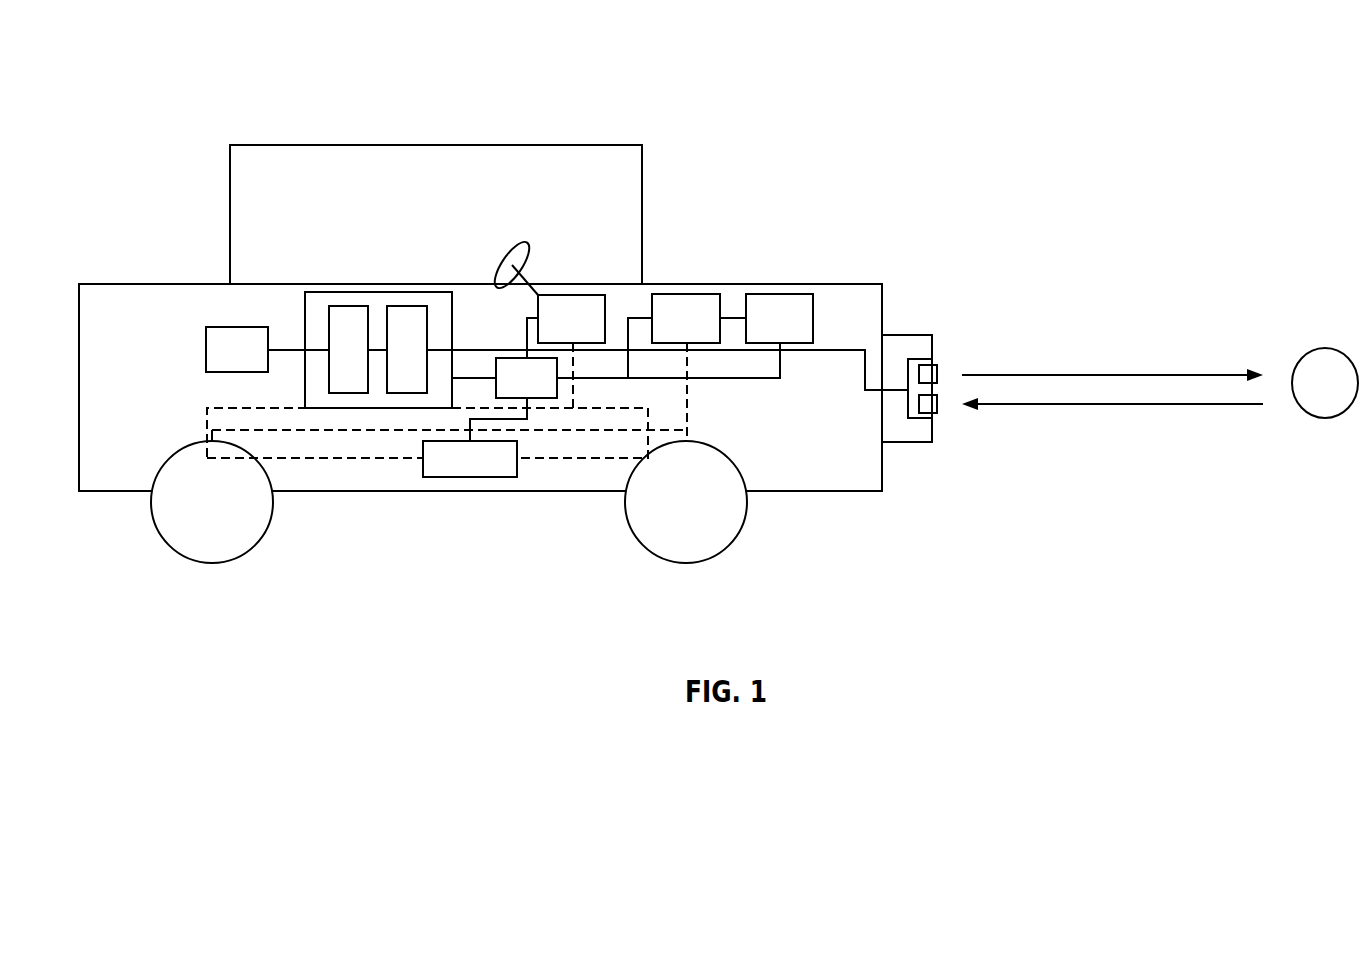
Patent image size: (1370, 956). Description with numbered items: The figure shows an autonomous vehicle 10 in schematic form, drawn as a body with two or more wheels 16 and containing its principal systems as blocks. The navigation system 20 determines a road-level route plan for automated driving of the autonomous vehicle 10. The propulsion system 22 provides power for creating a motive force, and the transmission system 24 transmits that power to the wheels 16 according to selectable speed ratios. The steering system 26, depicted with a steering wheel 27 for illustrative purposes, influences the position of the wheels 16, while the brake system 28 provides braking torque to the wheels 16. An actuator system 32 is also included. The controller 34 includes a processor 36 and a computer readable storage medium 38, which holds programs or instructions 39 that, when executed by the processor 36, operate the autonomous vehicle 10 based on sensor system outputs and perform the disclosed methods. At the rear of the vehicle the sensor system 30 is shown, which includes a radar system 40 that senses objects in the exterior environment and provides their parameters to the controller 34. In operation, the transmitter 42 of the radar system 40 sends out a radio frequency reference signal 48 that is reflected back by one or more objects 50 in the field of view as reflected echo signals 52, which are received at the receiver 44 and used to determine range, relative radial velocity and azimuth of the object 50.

The autonomous vehicle 10 is at (236, 78).
The wheels 16 is at (212, 563).
The navigation system 20 is at (236, 327).
The propulsion system 22 is at (780, 294).
The transmission system 24 is at (686, 294).
The steering system 26 is at (573, 295).
The steering wheel 27 is at (507, 262).
The brake system 28 is at (470, 477).
The sensor system 30 is at (902, 298).
The actuator system 32 is at (512, 393).
The controller 34 is at (372, 300).
The processor 36 is at (348, 306).
The computer readable storage medium 38 is at (408, 306).
The programs or instructions 39 is at (407, 393).
The radar system 40 is at (913, 420).
The transmitter 42 is at (937, 374).
The receiver 44 is at (937, 404).
The reference signal 48 is at (1112, 375).
The object 50 is at (1325, 348).
The echo signal 52 is at (1112, 404).